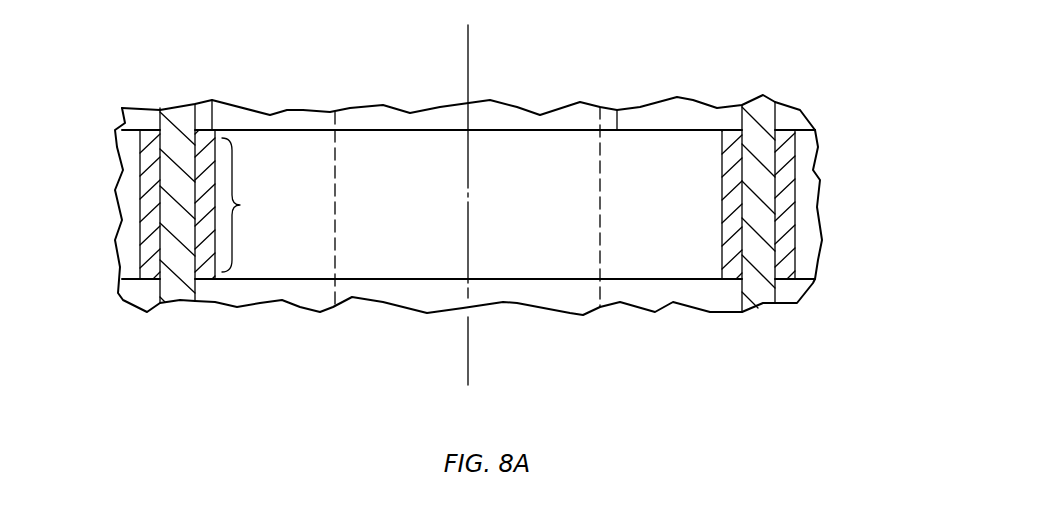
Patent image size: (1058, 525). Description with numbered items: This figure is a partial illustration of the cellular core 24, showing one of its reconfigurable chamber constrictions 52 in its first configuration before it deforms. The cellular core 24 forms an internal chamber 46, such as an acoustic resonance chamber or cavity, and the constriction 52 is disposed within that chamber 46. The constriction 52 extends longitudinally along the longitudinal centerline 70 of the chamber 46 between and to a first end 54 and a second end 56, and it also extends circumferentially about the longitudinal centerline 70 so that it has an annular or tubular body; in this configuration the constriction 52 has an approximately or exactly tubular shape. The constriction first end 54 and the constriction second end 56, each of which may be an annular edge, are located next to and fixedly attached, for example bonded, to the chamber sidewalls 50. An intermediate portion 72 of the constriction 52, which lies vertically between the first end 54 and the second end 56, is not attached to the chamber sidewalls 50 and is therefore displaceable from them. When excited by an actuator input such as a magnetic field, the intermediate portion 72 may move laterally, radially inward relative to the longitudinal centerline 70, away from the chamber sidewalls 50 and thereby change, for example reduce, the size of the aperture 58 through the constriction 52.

The cellular core 24 is at (836, 73).
The internal chamber 46 is at (293, 157).
The chamber sidewall 50 is at (178, 283).
The chamber constriction 52 is at (674, 131).
The first end of the constriction 54 is at (212, 100).
The second end of the constriction 56 is at (207, 280).
The aperture 58 is at (382, 258).
The longitudinal centerline 70 is at (468, 47).
The intermediate portion of the constriction 72 is at (252, 205).